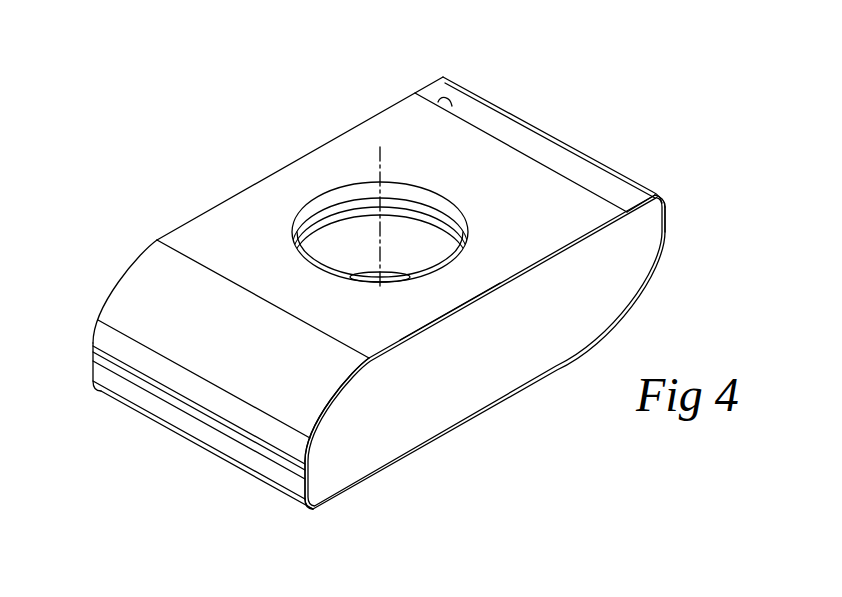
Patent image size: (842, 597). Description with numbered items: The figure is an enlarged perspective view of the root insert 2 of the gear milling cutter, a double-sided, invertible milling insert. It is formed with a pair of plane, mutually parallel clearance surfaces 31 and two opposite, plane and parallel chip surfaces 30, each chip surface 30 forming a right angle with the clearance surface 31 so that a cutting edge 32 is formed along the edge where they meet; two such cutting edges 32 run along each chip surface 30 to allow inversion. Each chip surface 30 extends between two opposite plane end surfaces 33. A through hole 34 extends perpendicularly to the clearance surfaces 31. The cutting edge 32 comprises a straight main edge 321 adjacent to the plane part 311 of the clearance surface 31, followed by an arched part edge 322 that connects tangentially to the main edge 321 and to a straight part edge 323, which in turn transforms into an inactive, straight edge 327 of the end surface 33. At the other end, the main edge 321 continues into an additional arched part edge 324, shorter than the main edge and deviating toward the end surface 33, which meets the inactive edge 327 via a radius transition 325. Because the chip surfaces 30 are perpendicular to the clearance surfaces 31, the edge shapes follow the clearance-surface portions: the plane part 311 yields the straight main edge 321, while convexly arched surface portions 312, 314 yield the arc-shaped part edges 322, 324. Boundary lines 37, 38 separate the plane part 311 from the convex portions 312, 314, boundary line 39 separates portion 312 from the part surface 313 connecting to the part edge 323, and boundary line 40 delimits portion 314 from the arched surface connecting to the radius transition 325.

The root insert 2 is at (544, 85).
The chip surface 30 is at (525, 356).
The clearance surface 31 is at (356, 147).
The cutting edge 32 is at (268, 162).
The end surface 33 is at (100, 370).
The through hole 34 is at (413, 217).
The boundary line 37 is at (202, 260).
The boundary line 38 is at (443, 101).
The boundary line 39 is at (128, 335).
The boundary line 40 is at (473, 94).
The plane part of the clearance surface 311 is at (566, 219).
The convex surface portion 312 is at (237, 336).
The part surface 313 is at (193, 391).
The convex surface portion 314 is at (530, 141).
The main edge 321 is at (453, 310).
The arched part edge 322 is at (335, 393).
The straight part edge 323 is at (312, 453).
The part edge 324 is at (643, 203).
The radius transition 325 is at (657, 195).
The inactive edge 327 is at (308, 483).